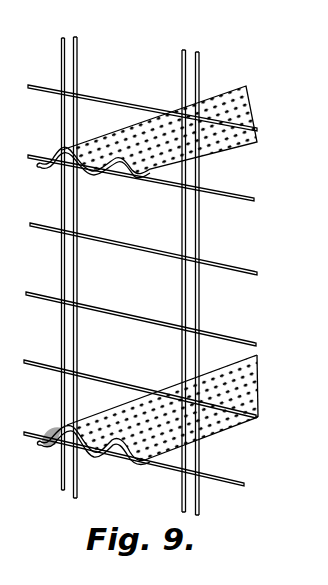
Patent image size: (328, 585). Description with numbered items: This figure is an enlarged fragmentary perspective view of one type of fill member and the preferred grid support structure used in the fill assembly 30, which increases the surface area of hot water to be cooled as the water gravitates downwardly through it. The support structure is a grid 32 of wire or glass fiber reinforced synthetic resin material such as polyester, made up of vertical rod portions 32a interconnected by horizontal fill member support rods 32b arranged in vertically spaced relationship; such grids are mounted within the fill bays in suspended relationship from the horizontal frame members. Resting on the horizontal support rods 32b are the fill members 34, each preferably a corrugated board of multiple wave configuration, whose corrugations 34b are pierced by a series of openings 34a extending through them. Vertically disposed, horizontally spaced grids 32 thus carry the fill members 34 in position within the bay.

The fill assembly 30 is at (163, 76).
The grid 32 is at (82, 283).
The vertical rod portion 32a is at (189, 236).
The horizontal fill member support rod 32b is at (110, 240).
The fill member 34 is at (139, 420).
The opening 34a is at (58, 424).
The corrugation 34b is at (139, 394).